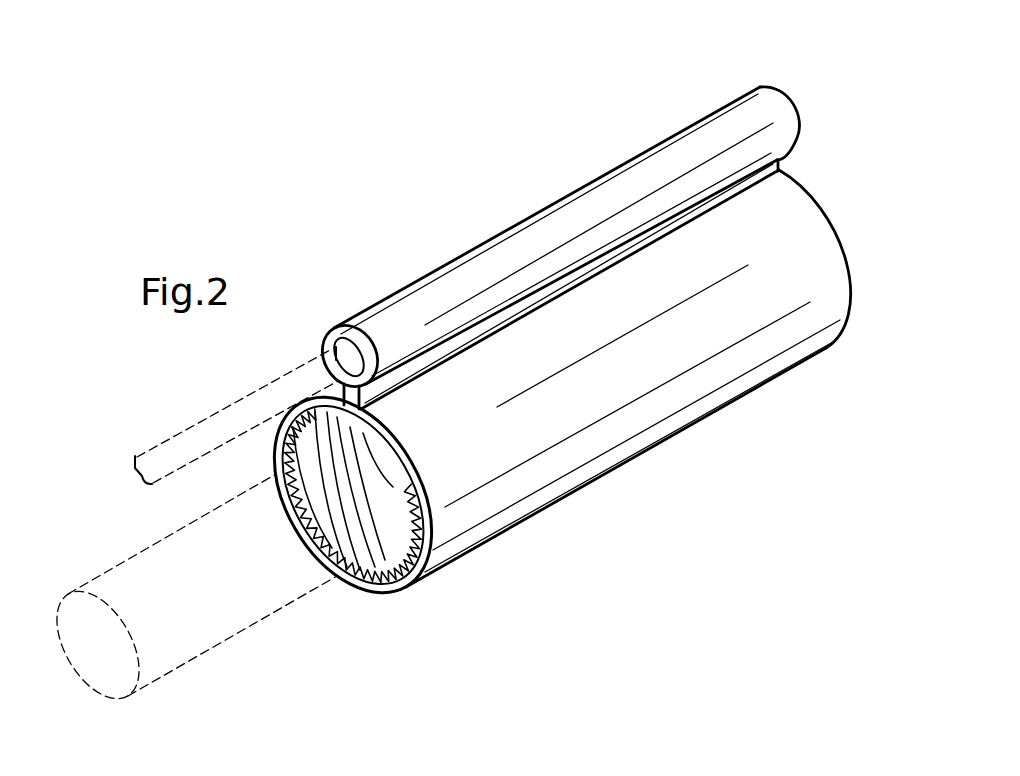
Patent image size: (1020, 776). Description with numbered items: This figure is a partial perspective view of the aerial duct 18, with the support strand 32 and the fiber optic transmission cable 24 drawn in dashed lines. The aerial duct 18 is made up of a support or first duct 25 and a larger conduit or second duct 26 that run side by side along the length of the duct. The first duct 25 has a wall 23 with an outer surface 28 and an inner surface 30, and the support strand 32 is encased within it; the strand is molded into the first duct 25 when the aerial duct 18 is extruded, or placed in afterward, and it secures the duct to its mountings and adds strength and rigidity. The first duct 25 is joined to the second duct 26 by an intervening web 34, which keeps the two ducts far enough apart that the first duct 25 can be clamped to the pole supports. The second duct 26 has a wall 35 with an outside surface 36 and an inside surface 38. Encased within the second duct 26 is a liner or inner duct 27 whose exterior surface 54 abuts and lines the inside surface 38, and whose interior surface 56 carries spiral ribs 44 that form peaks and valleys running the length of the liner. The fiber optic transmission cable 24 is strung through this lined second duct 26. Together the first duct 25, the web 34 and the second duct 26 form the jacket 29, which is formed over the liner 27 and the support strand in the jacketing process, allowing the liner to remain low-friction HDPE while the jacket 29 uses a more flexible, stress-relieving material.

The aerial duct 18 is at (460, 232).
The wall 23 is at (327, 338).
The fiber optic transmission cable 24 is at (93, 660).
The first duct 25 is at (786, 88).
The second duct 26 is at (830, 218).
The inner duct 27 is at (382, 604).
The outer surface 28 is at (380, 327).
The jacket 29 is at (676, 468).
The inner surface 30 is at (324, 360).
The support strand 32 is at (228, 411).
The web 34 is at (781, 167).
The wall 35 is at (403, 587).
The outside surface 36 is at (493, 498).
The inside surface 38 is at (361, 592).
The spiral ribs 44 is at (393, 587).
The exterior surface 54 is at (352, 585).
The interior surface 56 is at (292, 440).